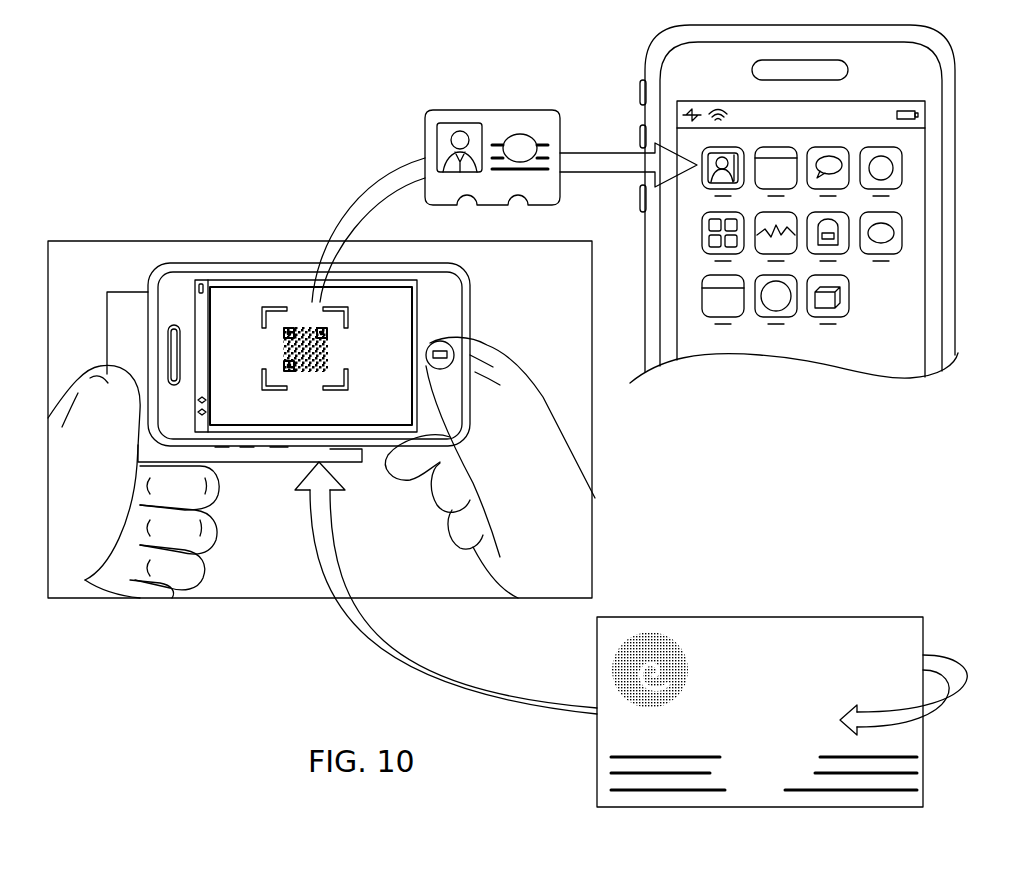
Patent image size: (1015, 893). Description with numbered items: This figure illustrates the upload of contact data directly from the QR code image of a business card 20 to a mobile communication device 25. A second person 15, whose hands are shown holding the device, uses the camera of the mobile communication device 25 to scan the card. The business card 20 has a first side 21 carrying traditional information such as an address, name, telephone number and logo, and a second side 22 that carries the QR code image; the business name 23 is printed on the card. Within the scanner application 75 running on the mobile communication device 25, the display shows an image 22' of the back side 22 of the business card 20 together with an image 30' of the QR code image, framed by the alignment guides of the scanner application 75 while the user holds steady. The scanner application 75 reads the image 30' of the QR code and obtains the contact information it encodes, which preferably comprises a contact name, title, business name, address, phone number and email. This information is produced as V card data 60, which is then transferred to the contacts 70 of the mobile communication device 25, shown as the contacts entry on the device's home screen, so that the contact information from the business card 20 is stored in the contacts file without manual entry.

The second person 15 is at (567, 471).
The business card 20 is at (690, 617).
The first side 21 is at (915, 745).
The second side 22 is at (551, 446).
The image of the back side 22' is at (308, 320).
The business name 23 is at (806, 634).
The mobile communication device 25 is at (253, 265).
The image of the QR code image 30' is at (305, 292).
The V card data 60 is at (527, 110).
The contacts 70 is at (708, 190).
The scanner application 75 is at (348, 302).